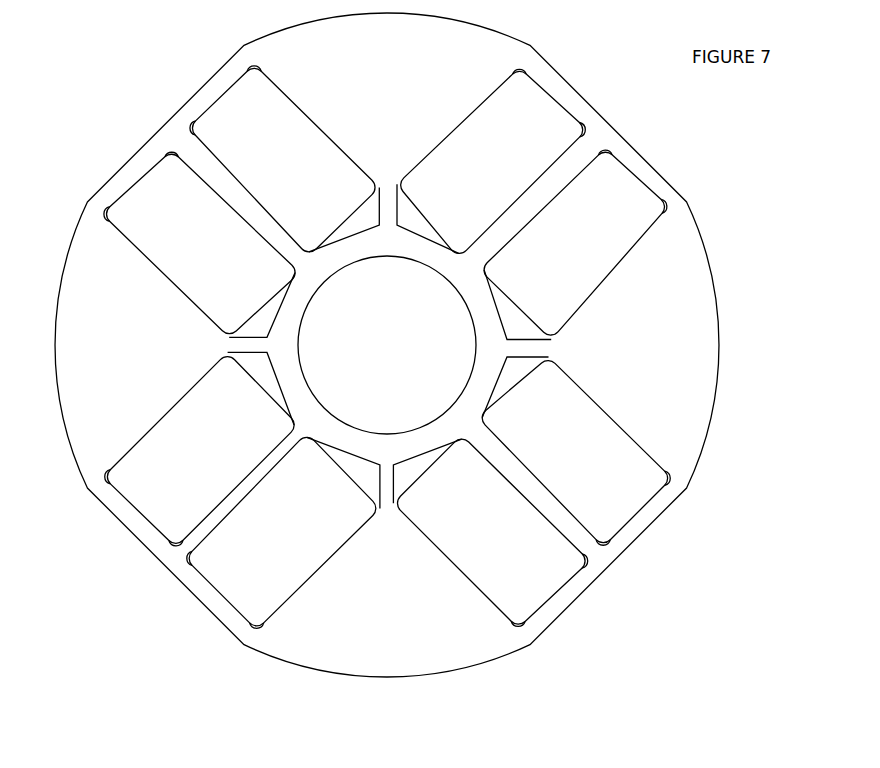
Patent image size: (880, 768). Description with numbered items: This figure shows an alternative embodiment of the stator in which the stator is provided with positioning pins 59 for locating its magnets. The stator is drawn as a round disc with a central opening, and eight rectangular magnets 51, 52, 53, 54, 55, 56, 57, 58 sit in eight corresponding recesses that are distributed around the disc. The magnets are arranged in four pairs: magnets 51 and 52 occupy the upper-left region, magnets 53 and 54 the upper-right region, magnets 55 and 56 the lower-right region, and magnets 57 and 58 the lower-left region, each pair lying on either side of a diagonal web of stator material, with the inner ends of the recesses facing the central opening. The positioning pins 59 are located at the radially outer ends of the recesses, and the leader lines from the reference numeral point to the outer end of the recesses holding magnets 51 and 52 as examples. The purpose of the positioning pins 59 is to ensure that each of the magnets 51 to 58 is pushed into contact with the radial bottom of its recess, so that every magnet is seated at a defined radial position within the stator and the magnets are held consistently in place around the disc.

The magnet 51 is at (199, 263).
The magnet 52 is at (303, 180).
The magnet 53 is at (464, 177).
The magnet 54 is at (568, 260).
The magnet 55 is at (568, 445).
The magnet 56 is at (464, 537).
The magnet 57 is at (303, 528).
The magnet 58 is at (199, 445).
The positioning pin 59 is at (132, 185).